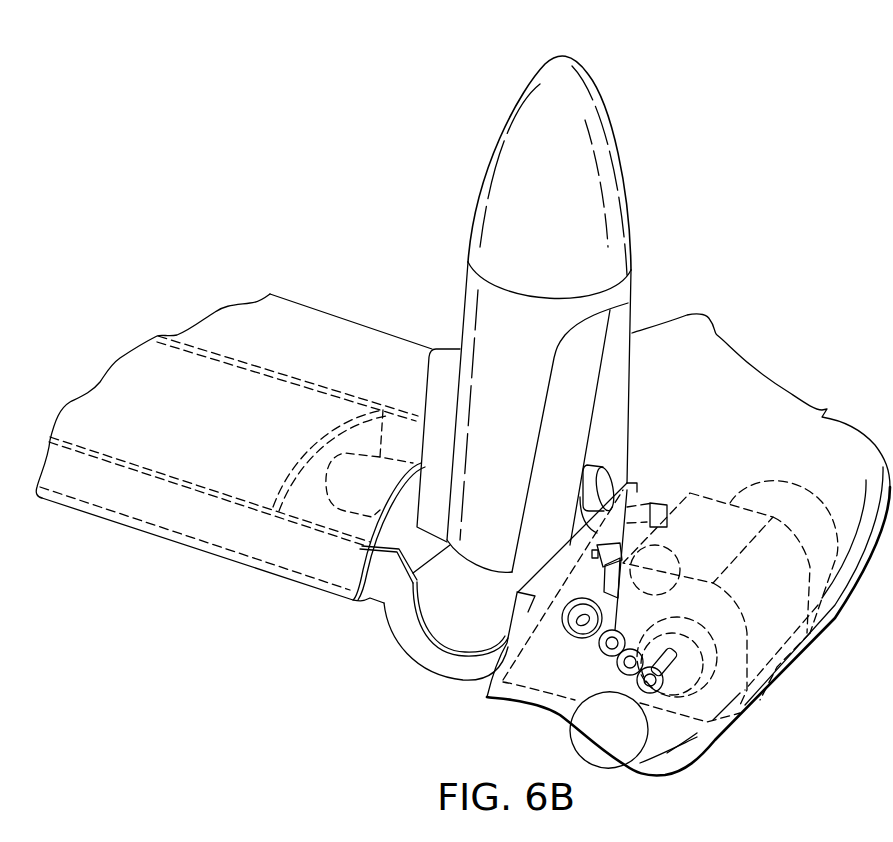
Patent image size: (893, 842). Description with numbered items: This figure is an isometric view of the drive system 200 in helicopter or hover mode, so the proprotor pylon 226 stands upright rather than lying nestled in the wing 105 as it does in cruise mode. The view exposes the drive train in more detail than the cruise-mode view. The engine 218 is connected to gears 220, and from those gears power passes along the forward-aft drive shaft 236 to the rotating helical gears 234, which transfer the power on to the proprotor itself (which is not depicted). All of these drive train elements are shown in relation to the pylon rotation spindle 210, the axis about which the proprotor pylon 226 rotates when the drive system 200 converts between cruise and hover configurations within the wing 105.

The drive system 200 is at (209, 243).
The wing 105 is at (352, 337).
The pylon rotation spindle 210 is at (340, 483).
The proprotor pylon 226 is at (655, 210).
The rotating helical gears 234 is at (598, 447).
The forward-aft drive shaft 236 is at (657, 567).
The engine 218 is at (773, 642).
The gears 220 is at (588, 657).